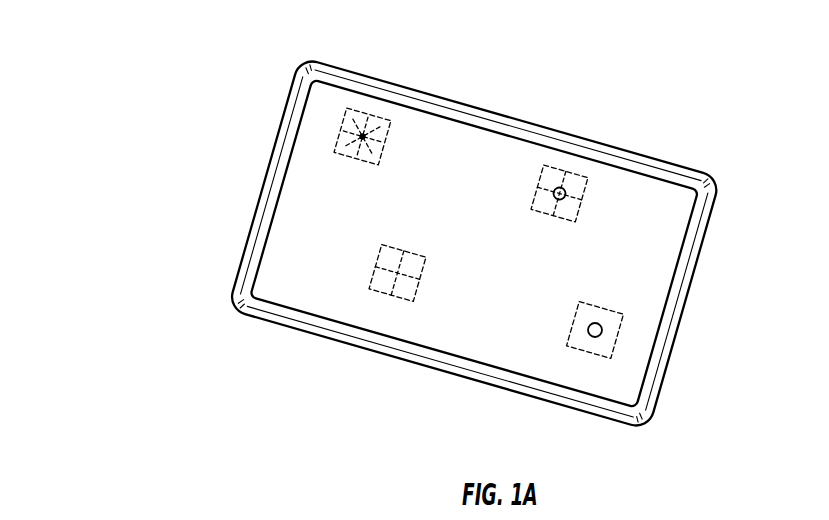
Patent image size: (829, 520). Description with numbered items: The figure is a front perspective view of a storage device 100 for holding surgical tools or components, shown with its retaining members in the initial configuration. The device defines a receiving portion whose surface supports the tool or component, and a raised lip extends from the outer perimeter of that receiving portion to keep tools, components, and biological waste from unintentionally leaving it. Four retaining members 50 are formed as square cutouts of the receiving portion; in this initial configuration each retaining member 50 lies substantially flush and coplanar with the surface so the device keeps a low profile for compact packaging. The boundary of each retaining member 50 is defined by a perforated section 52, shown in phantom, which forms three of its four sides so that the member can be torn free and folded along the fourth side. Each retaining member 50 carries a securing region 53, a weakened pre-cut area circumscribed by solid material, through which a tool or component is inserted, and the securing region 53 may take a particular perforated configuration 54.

The storage device 100 is at (110, 108).
The retaining member 50 is at (483, 230).
The perforated section 52 is at (483, 232).
The securing region 53 is at (348, 140).
The perforated configuration 54 is at (380, 128).